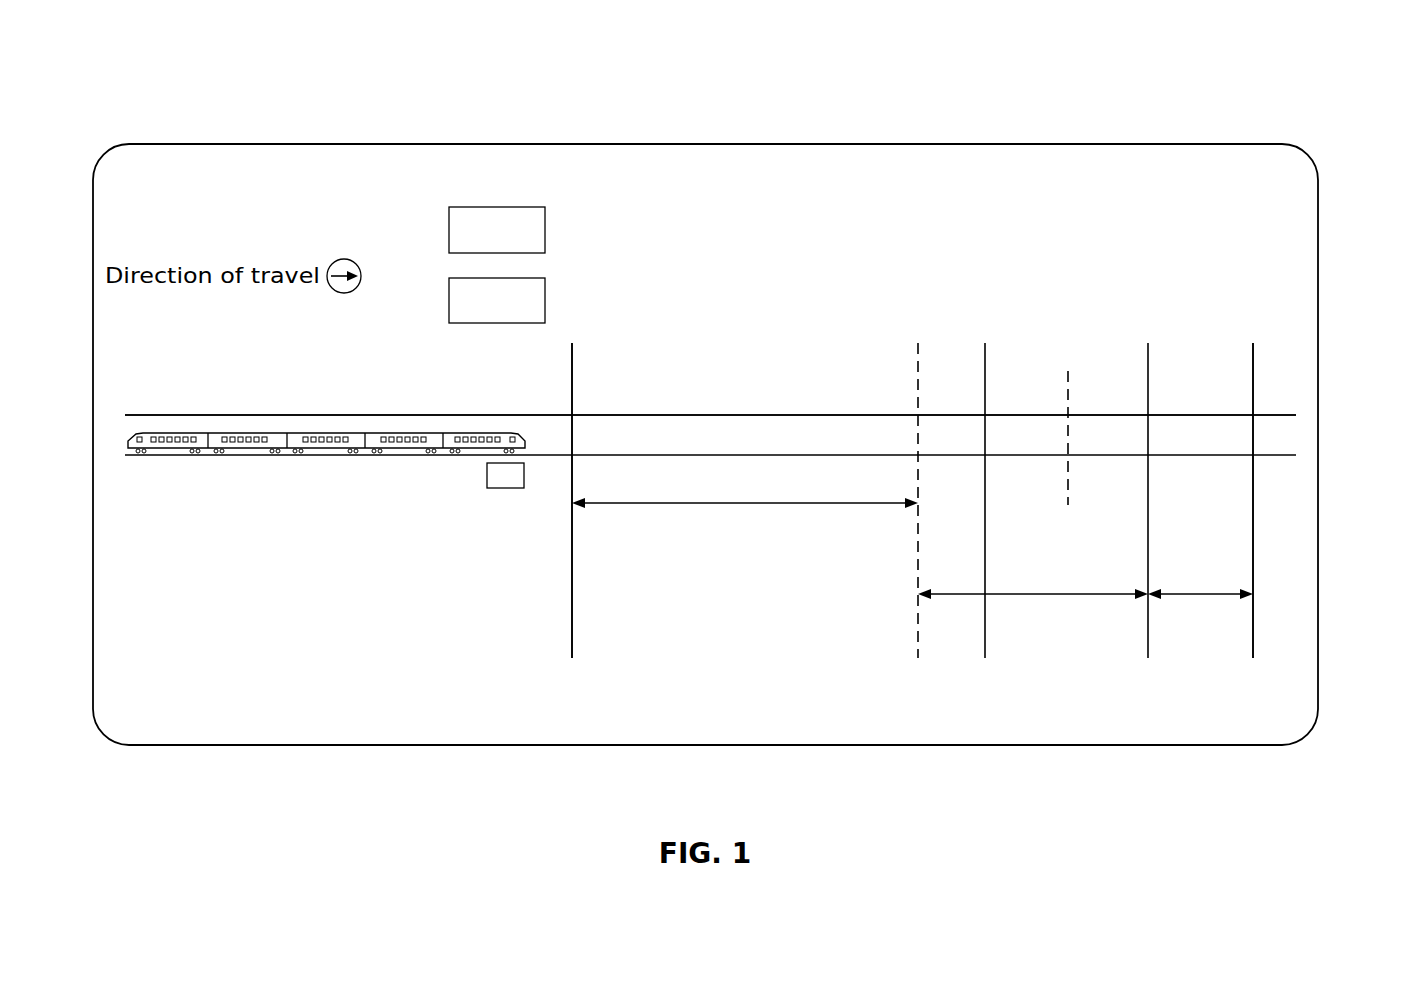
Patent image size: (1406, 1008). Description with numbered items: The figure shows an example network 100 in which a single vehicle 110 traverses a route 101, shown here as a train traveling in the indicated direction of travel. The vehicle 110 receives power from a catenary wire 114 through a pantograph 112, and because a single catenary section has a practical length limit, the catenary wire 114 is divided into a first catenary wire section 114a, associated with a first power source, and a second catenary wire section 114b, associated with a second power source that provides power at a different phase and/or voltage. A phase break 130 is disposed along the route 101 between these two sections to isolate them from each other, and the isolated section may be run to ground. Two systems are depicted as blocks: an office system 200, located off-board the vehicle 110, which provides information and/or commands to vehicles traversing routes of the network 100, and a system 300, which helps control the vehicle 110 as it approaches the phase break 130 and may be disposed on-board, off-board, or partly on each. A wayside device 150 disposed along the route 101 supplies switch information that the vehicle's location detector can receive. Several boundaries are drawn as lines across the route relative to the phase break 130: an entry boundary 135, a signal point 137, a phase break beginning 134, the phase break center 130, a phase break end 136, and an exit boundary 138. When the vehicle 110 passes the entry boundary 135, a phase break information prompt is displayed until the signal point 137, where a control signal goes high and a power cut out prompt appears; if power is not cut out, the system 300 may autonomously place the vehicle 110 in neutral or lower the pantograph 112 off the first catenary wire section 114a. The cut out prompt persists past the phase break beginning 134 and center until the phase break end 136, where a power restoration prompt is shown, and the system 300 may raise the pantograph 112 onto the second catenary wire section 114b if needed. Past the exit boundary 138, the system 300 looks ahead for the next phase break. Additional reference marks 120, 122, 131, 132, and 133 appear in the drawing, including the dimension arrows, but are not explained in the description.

The network 100 is at (268, 108).
The route 101 is at (386, 552).
The vehicle 110 is at (118, 445).
The pantograph 112 is at (238, 437).
The catenary wire 114 is at (608, 413).
The first catenary wire section 114a is at (550, 368).
The second catenary wire section 114b is at (1290, 390).
The route rail 120 is at (312, 414).
The route segment area 122 is at (732, 306).
The phase break 130 is at (1135, 196).
The first distance 131 is at (872, 518).
The intermediate position line 132 is at (1069, 373).
The second distance 133 is at (1120, 616).
The phase break beginning 134 is at (985, 393).
The entry boundary 135 is at (572, 630).
The phase break end 136 is at (1148, 365).
The signal point 137 is at (916, 378).
The exit boundary 138 is at (1253, 365).
The wayside device 150 is at (505, 490).
The office system 200 is at (497, 230).
The system 300 is at (497, 300).